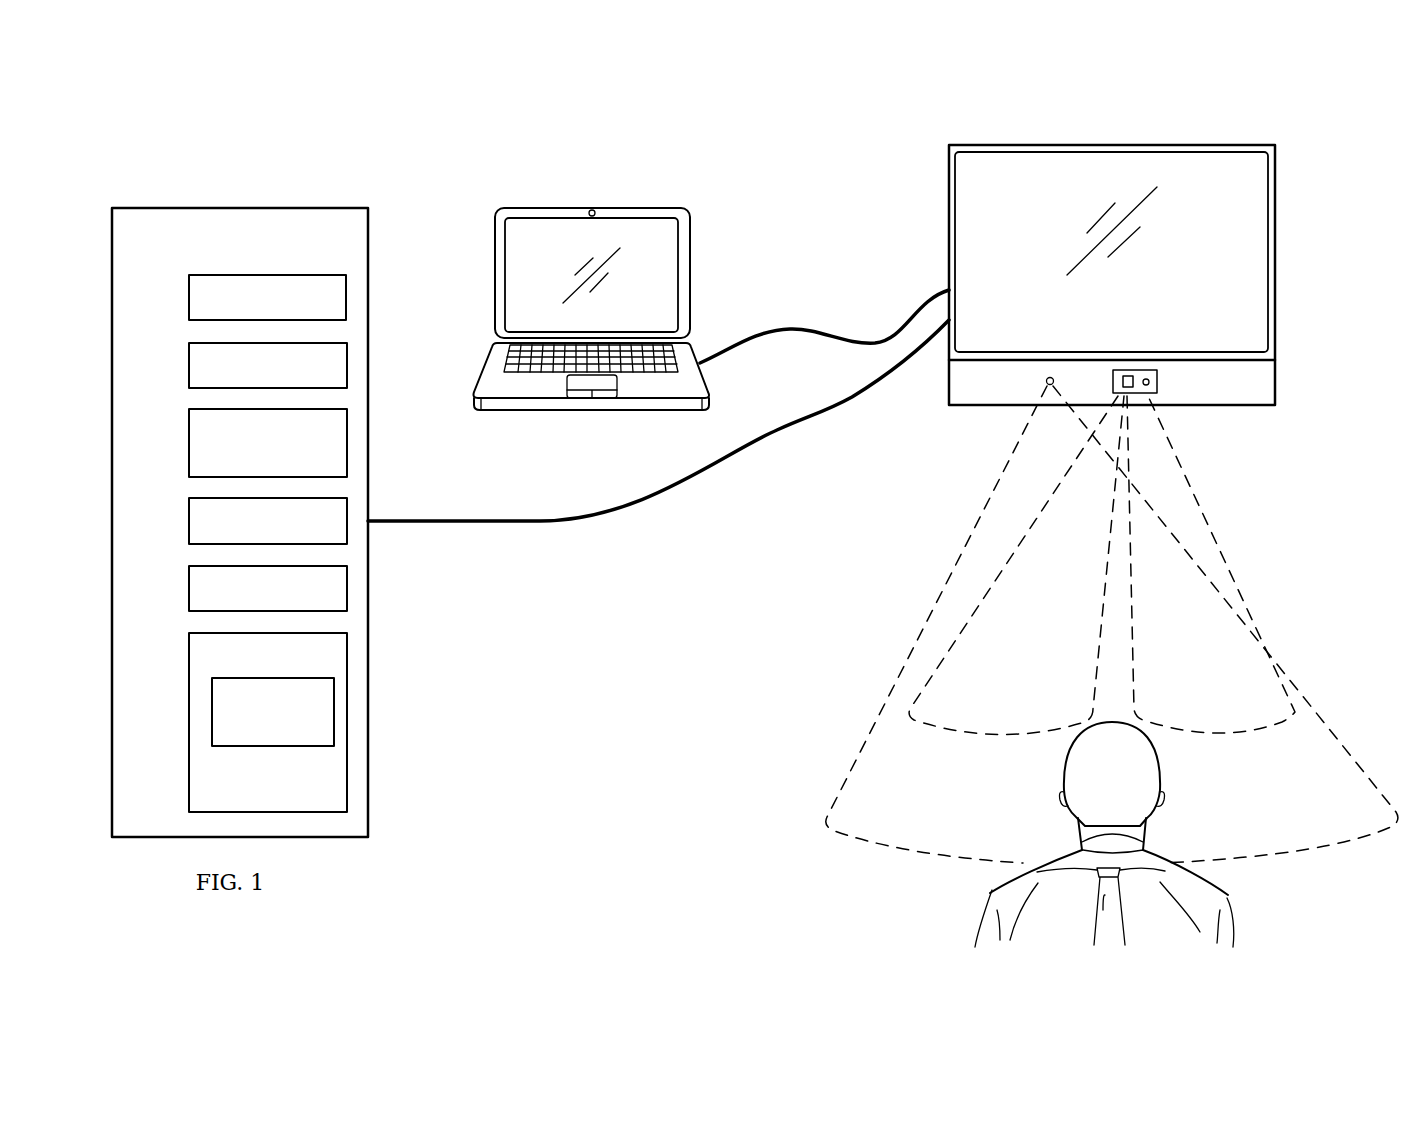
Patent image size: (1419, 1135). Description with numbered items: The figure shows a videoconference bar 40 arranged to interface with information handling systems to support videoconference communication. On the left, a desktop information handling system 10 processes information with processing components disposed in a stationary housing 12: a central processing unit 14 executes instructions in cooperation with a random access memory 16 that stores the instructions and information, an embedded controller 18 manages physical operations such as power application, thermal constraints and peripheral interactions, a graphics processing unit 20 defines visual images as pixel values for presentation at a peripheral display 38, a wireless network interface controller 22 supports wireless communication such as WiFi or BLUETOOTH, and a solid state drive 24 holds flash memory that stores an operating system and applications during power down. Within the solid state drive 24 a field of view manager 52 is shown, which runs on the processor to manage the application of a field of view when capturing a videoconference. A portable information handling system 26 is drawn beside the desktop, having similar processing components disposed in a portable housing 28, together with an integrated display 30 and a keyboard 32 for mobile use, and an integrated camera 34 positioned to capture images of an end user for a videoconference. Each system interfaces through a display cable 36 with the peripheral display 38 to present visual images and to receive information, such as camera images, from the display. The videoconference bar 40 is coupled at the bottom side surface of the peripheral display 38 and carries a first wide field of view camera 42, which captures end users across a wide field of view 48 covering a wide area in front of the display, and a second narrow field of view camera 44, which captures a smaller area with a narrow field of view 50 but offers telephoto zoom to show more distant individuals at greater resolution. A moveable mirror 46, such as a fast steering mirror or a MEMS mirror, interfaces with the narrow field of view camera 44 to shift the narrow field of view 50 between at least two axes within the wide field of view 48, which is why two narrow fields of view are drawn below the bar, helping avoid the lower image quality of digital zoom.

The information handling system 10 is at (198, 156).
The stationary housing 12 is at (317, 199).
The central processing unit 14 is at (189, 297).
The random access memory 16 is at (189, 364).
The embedded controller 18 is at (189, 443).
The graphics processing unit 20 is at (189, 520).
The wireless network interface controller 22 is at (189, 587).
The solid state drive 24 is at (189, 723).
The portable information handling system 26 is at (683, 140).
The portable housing 28 is at (690, 275).
The integrated display 30 is at (522, 247).
The keyboard 32 is at (543, 373).
The integrated camera 34 is at (591, 210).
The display cable 36 is at (857, 397).
The peripheral display 38 is at (1253, 213).
The videoconference bar 40 is at (1265, 370).
The wide field of view camera 42 is at (1046, 382).
The narrow field of view camera 44 is at (1158, 381).
The moveable mirror 46 is at (1128, 373).
The wide field of view 48 is at (1263, 862).
The narrow field of view 50 is at (983, 732).
The field of view manager 52 is at (268, 746).